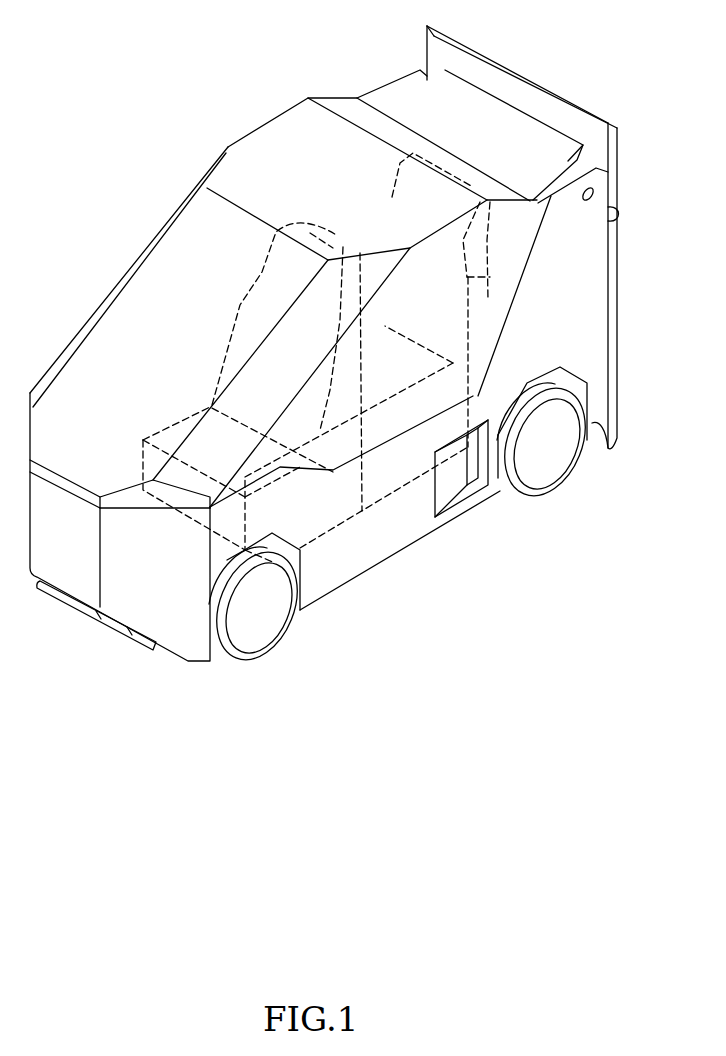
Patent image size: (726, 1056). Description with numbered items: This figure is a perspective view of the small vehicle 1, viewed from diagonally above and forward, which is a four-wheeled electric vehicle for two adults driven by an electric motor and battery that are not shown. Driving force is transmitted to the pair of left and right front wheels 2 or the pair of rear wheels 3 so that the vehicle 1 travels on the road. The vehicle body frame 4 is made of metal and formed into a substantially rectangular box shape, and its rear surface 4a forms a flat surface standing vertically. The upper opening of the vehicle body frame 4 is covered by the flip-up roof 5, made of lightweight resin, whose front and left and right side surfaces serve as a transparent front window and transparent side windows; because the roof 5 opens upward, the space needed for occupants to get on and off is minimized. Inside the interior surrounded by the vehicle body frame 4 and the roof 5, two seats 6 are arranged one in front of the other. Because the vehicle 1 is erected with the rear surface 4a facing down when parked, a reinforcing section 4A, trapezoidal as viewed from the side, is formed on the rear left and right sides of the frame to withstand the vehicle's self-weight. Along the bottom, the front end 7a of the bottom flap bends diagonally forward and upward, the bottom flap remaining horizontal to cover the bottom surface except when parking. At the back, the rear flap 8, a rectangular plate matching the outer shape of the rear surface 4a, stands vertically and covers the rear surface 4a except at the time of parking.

The vehicle 1 is at (168, 146).
The front wheels 2 is at (257, 638).
The rear wheels 3 is at (549, 468).
The vehicle body frame 4 is at (377, 550).
The reinforcing section 4A is at (583, 322).
The rear surface 4a is at (607, 219).
The roof 5 is at (103, 340).
The seats 6 is at (240, 303).
The front end 7a is at (105, 622).
The rear flap 8 is at (600, 118).